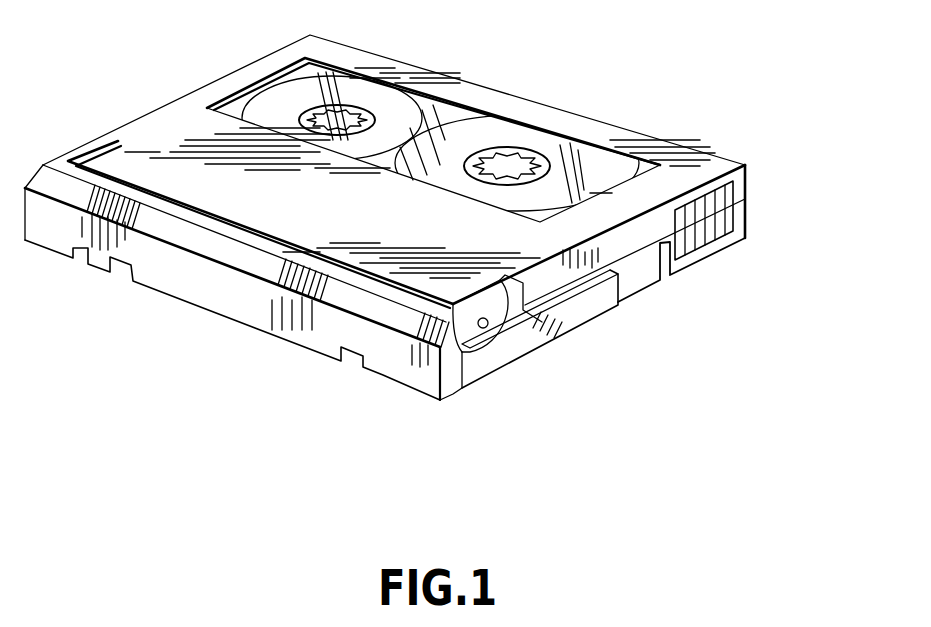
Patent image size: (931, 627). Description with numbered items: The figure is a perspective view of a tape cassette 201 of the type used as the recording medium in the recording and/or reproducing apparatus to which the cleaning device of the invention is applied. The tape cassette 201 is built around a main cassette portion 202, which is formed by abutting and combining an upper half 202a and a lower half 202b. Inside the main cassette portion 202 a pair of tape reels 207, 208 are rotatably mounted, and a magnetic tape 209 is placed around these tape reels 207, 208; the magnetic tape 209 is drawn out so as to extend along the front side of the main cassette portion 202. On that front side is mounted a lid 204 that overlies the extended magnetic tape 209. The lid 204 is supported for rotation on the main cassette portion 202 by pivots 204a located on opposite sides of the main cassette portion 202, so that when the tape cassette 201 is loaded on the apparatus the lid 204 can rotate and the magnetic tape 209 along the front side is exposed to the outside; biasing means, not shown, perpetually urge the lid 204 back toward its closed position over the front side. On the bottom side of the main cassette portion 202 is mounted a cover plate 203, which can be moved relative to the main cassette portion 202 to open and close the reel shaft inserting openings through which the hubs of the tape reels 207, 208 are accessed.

The tape cassette 201 is at (643, 301).
The main cassette portion 202 is at (840, 118).
The upper half 202a is at (740, 183).
The lower half 202b is at (743, 218).
The cover plate 203 is at (560, 335).
The lid 204 is at (317, 341).
The pivots 204a is at (488, 328).
The tape reel 207 is at (306, 116).
The tape reel 208 is at (550, 162).
The magnetic tape 209 is at (500, 128).